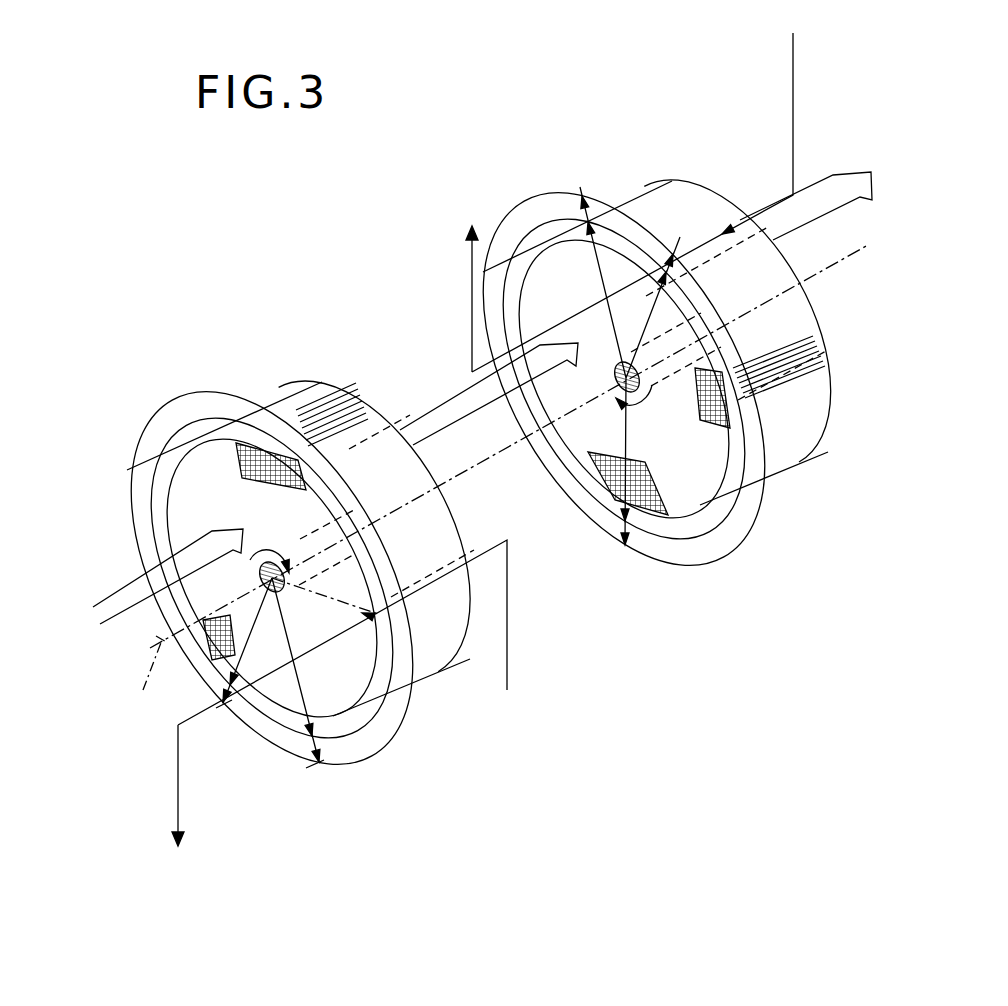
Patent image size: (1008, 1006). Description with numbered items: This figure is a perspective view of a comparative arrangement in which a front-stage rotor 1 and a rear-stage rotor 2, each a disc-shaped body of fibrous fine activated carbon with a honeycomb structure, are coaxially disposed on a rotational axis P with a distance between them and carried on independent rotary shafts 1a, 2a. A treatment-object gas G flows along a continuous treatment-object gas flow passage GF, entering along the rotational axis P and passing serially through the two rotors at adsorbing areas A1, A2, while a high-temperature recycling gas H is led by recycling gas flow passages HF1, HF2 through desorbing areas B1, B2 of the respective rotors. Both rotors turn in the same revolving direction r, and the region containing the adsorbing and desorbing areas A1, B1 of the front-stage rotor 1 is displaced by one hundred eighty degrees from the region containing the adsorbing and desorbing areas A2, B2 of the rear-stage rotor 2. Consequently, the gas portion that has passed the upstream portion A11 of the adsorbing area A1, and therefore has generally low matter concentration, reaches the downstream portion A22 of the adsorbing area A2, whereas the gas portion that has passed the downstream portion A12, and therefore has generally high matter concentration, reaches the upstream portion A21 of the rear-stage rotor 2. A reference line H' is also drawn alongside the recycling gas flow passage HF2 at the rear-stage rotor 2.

The front-stage rotor 1 is at (332, 388).
The rear-stage rotor 2 is at (813, 343).
The rotary shaft 1a is at (256, 578).
The rotary shaft 2a is at (612, 372).
The adsorbing area A1 is at (192, 394).
The upstream portion A11 is at (151, 487).
The downstream portion A12 is at (394, 706).
The adsorbing area A2 is at (757, 522).
The upstream portion A21 is at (712, 537).
The downstream portion A22 is at (552, 470).
The desorbing area B1 is at (268, 748).
The desorbing area B2 is at (603, 200).
The treatment-object gas G is at (149, 579).
The treatment-object gas flow passage GF is at (432, 408).
The high-temperature recycling gas H is at (347, 693).
The reference plane of second wheel H' is at (638, 186).
The recycling gas flow passage HF1 is at (507, 590).
The recycling gas flow passage HF2 is at (793, 98).
The rotational axis P is at (150, 682).
The revolving direction r is at (252, 556).